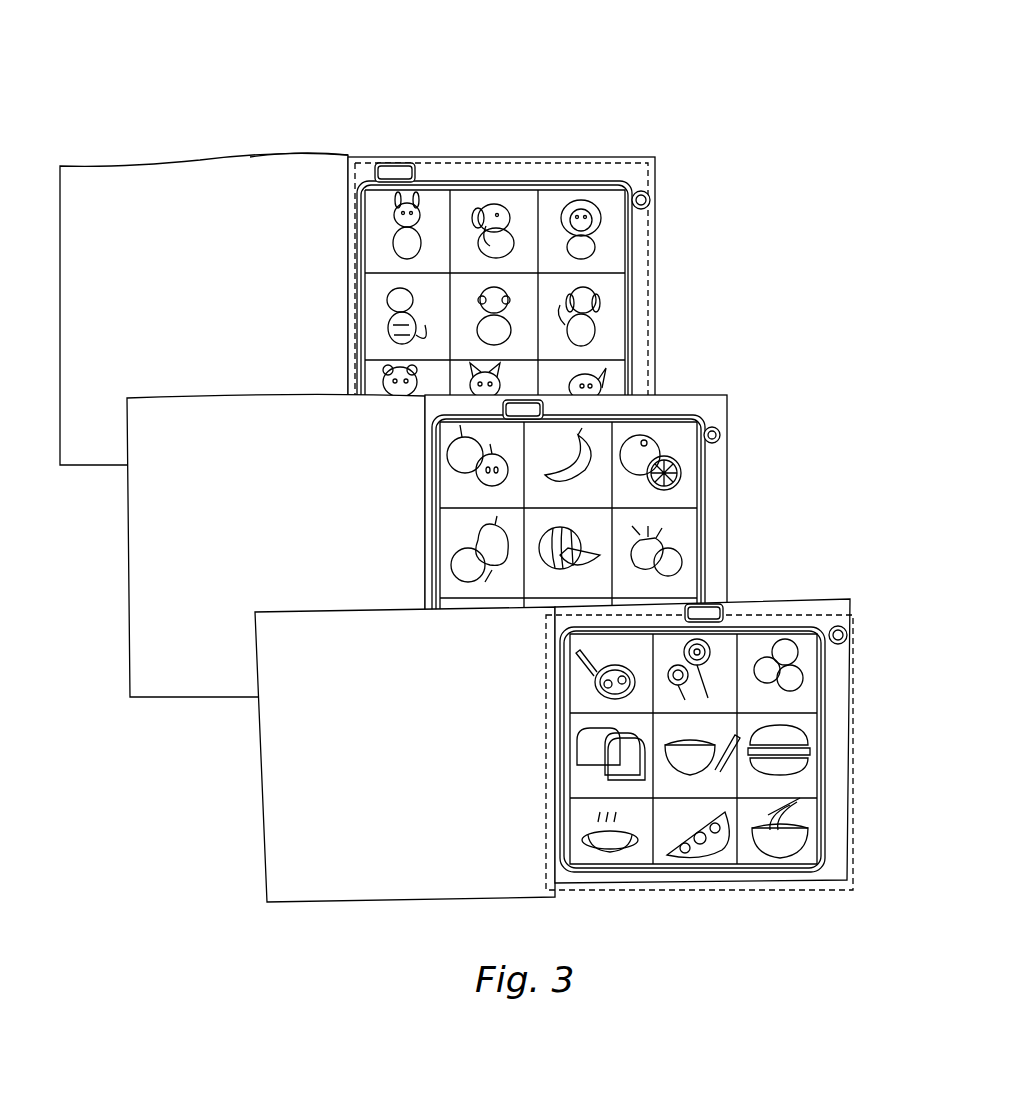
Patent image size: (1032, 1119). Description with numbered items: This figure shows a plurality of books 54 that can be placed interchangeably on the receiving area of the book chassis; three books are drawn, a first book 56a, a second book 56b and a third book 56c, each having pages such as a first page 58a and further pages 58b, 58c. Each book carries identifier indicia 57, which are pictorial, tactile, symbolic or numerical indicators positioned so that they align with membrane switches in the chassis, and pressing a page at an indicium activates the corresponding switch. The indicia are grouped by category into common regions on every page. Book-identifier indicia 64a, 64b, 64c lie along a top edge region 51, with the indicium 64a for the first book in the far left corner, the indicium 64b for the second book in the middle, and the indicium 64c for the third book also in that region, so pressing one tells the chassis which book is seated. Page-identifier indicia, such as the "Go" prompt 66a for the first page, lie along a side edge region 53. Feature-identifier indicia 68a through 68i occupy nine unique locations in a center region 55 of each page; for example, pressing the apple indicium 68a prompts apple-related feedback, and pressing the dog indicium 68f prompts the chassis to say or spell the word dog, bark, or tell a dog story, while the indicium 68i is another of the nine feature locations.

The plurality of books 54 is at (107, 85).
The first book 56a is at (300, 254).
The second book 56b is at (165, 592).
The third book 56c is at (298, 822).
The identifier indicia 57 is at (505, 127).
The top edge region 51 is at (570, 157).
The first page 58a is at (588, 250).
The second page 58b is at (607, 510).
The third page 58c is at (733, 728).
The book-identifier indicium 64a is at (392, 165).
The book-identifier indicium 64b is at (500, 412).
The book-identifier indicium 64c is at (722, 604).
The page-identifier indicium 66a is at (651, 196).
The sound-identifier indicium 68f is at (613, 333).
The feature-identifier indicium 68a is at (440, 472).
The feature-identifier indicium 68i is at (803, 848).
The center region 55 is at (785, 605).
The side edge region 53 is at (855, 735).